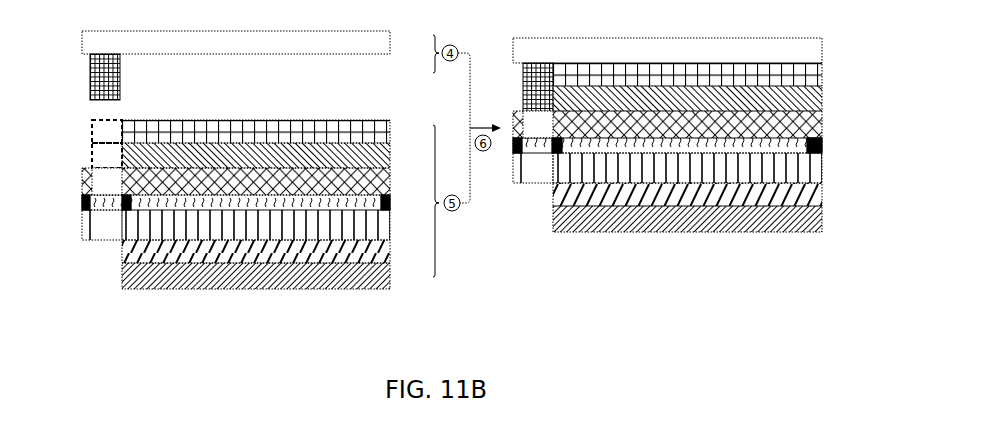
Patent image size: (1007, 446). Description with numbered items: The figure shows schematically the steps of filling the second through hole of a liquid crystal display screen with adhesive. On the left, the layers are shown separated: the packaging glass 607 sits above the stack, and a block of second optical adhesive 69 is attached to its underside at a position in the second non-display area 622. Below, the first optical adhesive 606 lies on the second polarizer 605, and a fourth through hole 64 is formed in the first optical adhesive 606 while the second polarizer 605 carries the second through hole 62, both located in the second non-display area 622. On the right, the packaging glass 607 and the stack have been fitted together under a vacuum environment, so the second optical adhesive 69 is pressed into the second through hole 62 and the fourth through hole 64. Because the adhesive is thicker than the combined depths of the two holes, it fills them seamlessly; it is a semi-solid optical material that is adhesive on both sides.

The second through hole 62 is at (92, 150).
The fourth through hole 64 is at (92, 123).
The second optical adhesive 69 is at (90, 78).
The second polarizer 605 is at (386, 154).
The first optical adhesive 606 is at (385, 129).
The packaging glass 607 is at (390, 44).
The second non-display area 622 is at (122, 290).